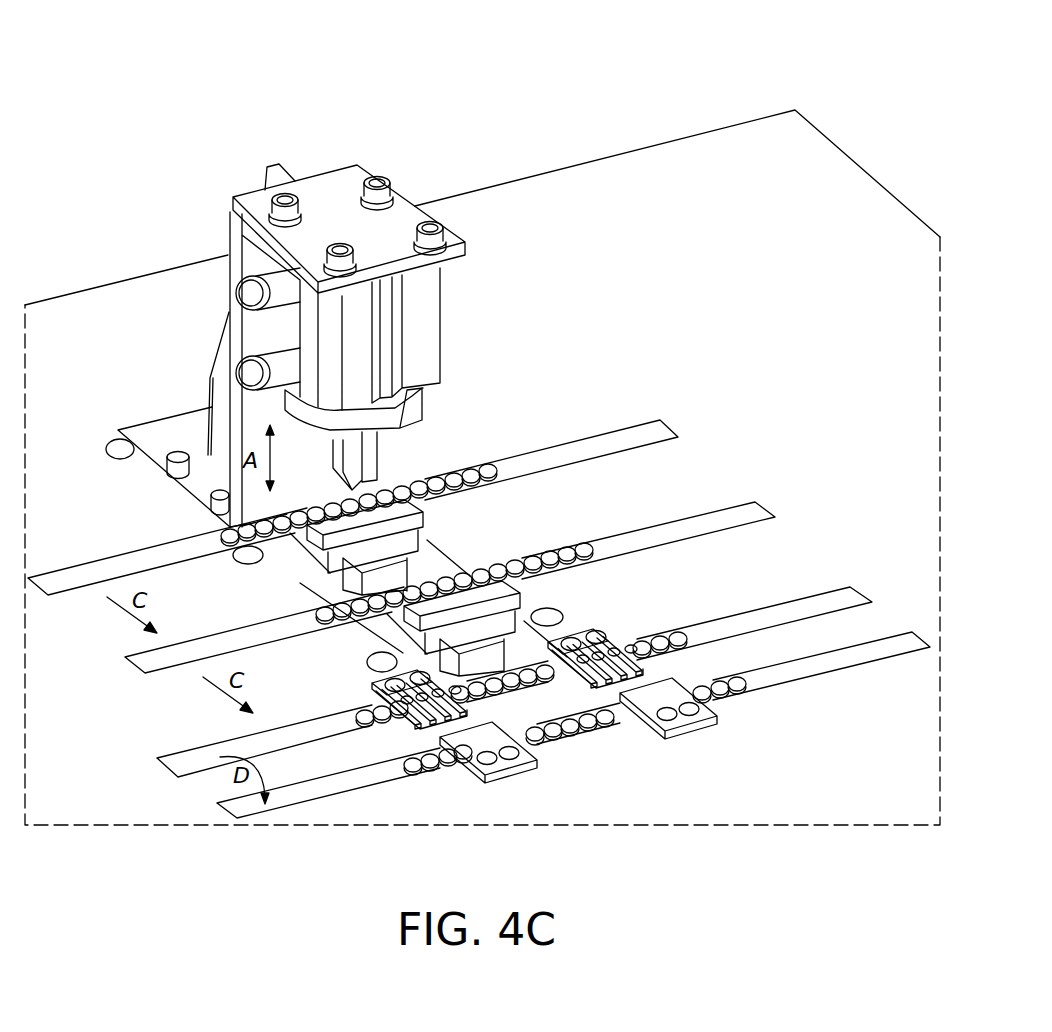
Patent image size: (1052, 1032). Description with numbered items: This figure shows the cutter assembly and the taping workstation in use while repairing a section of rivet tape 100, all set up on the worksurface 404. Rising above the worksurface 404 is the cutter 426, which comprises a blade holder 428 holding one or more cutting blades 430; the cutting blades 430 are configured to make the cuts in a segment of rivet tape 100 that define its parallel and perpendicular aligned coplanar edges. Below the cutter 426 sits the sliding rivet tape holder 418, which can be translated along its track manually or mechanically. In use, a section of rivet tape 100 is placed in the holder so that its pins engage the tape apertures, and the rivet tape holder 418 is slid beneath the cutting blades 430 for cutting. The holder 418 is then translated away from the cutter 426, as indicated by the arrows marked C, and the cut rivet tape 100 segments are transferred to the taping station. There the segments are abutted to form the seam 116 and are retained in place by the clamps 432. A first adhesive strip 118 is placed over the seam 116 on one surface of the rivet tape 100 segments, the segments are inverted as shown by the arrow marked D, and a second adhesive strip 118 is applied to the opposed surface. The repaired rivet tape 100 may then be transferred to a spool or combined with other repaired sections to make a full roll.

The rivet tape 100 is at (648, 428).
The seam 116 is at (573, 727).
The adhesive strip 118 is at (635, 716).
The worksurface 404 is at (805, 130).
The rivet tape holder 418 is at (430, 518).
The cutter 426 is at (460, 290).
The blade holder 428 is at (418, 403).
The cutting blade 430 is at (378, 463).
The clamp 432 is at (372, 684).